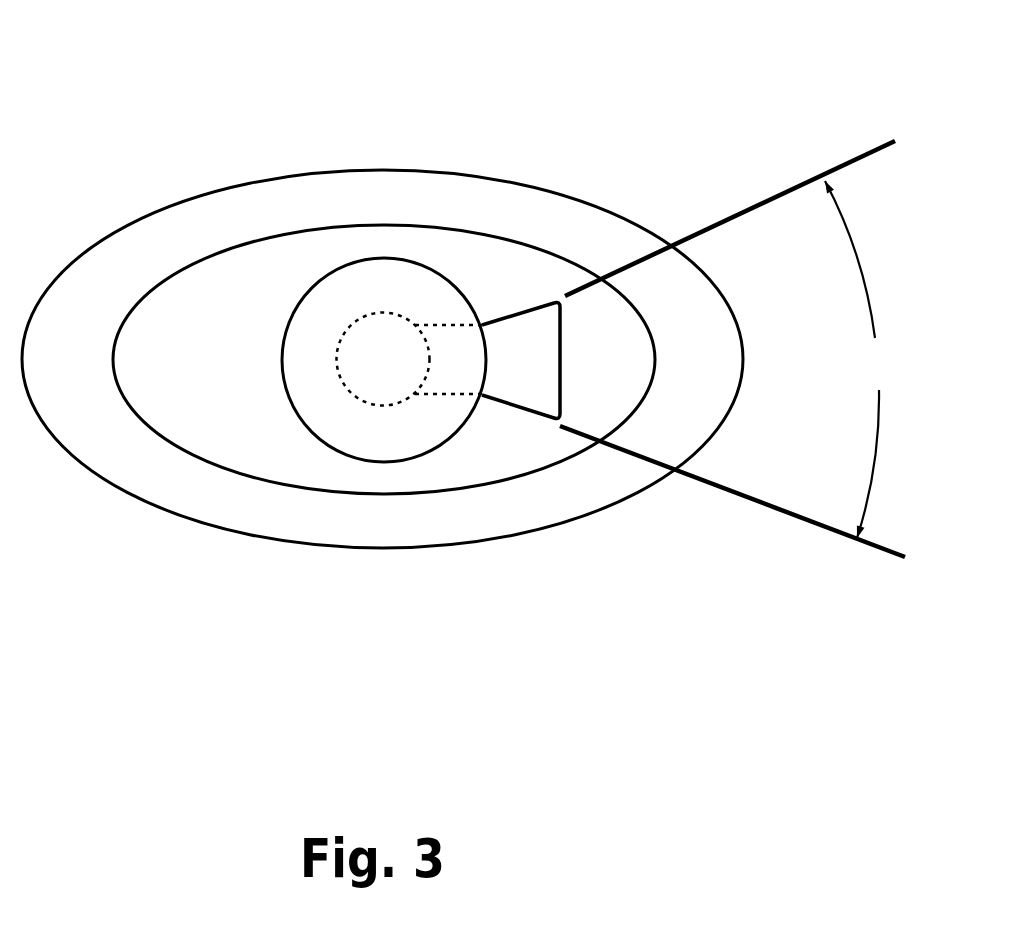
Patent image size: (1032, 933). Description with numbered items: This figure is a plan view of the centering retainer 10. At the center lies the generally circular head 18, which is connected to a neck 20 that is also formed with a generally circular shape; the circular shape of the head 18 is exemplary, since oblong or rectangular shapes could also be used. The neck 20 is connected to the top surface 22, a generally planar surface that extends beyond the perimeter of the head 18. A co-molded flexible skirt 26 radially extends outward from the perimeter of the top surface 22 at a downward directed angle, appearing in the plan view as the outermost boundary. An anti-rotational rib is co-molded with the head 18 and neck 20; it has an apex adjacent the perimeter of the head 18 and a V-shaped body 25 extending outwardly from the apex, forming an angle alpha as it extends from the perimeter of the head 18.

The centering retainer 10 is at (472, 121).
The head 18 is at (360, 440).
The neck 20 is at (368, 311).
The top surface 22 is at (237, 267).
The V-shaped body 25 is at (535, 395).
The flexible skirt 26 is at (116, 250).